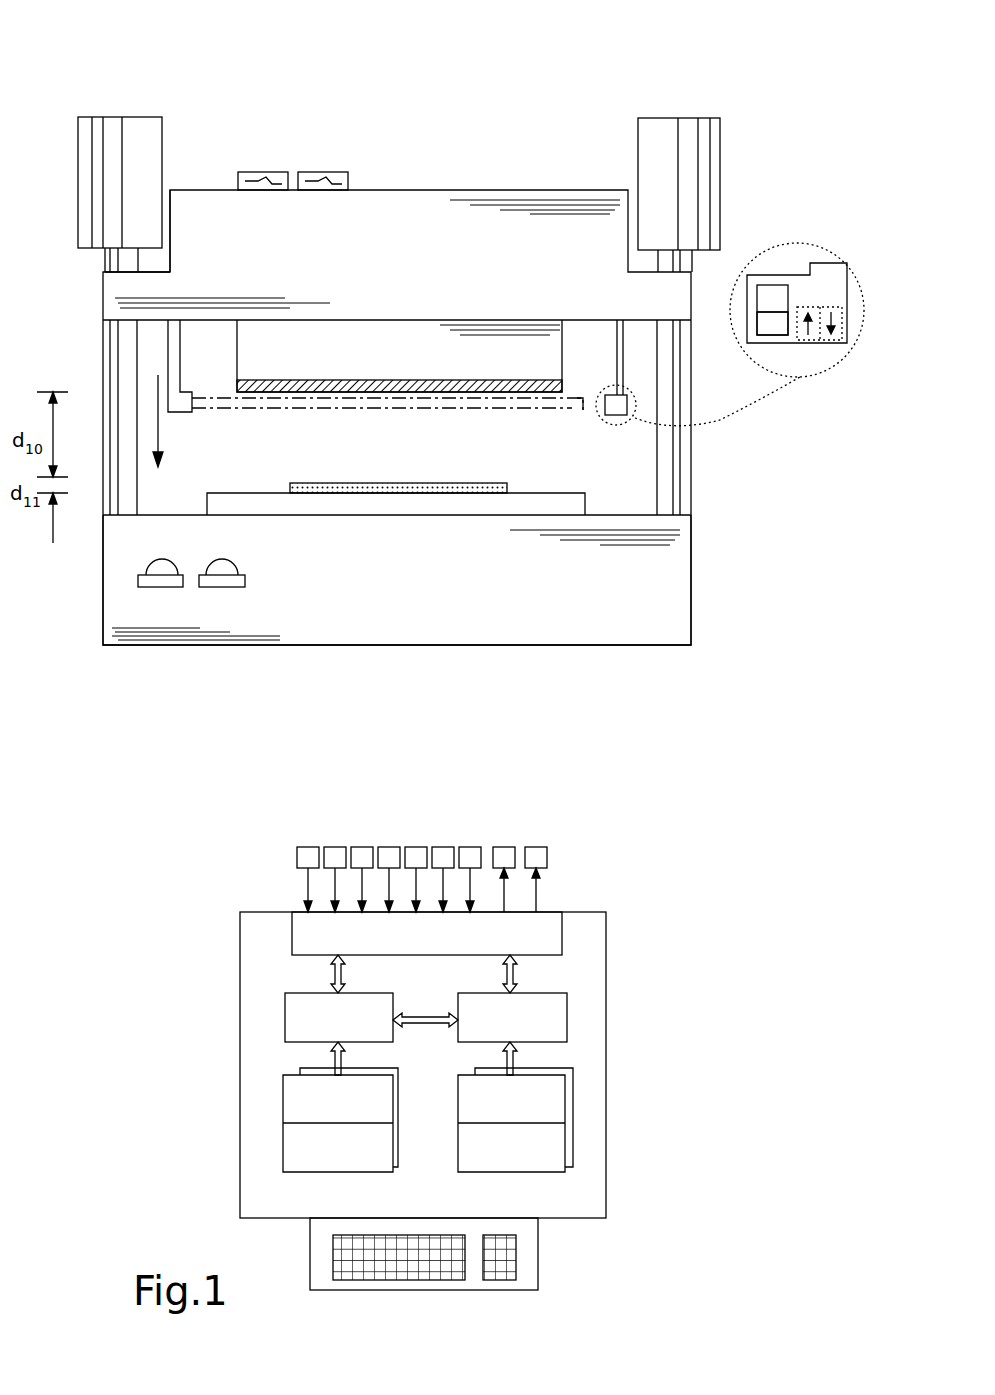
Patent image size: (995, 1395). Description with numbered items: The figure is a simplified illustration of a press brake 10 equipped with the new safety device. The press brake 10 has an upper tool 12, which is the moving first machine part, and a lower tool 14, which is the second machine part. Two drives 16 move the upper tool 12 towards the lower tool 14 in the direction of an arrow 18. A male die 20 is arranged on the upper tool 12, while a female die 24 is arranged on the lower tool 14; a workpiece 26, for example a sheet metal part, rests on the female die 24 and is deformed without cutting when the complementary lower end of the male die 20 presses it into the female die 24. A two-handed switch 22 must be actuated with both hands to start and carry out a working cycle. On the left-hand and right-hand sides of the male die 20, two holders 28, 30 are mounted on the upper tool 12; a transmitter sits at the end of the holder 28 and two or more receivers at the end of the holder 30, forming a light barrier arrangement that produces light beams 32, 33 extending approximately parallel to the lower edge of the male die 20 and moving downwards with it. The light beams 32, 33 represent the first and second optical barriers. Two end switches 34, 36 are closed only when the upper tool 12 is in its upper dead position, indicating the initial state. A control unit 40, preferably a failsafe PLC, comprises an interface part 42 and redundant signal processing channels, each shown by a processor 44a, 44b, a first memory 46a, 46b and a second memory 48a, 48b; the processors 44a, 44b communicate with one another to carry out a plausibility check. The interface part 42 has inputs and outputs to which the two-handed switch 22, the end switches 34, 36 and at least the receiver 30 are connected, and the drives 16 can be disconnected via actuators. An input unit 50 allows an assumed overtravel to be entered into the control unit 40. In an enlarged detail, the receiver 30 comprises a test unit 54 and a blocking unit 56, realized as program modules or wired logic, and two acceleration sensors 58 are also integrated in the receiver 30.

The press brake 10 is at (528, 112).
The upper tool 12 is at (130, 286).
The lower tool 14 is at (683, 598).
The drives 16 is at (112, 117).
The arrow 18 is at (158, 421).
The male die 20 is at (497, 355).
The two-handed switch 22 is at (158, 587).
The female die 24 is at (460, 500).
The workpiece 26 is at (404, 476).
The holder 28 is at (178, 345).
The holder / receiver 30 is at (607, 393).
The light beam (first optical barrier) 32 is at (557, 410).
The light beam (second optical barrier) 33 is at (583, 410).
The end switch 34 is at (270, 172).
The end switch 36 is at (330, 172).
The control unit 40 is at (240, 940).
The interface part 42 is at (555, 935).
The processor 44a is at (290, 1018).
The processor 44b is at (565, 1018).
The first memory 46a is at (285, 1100).
The first memory 46b is at (560, 1098).
The second memory 48a is at (285, 1148).
The second memory 48b is at (560, 1148).
The input unit 50 is at (540, 1253).
The test unit 54 is at (776, 292).
The blocking unit 56 is at (775, 322).
The acceleration sensors 58 is at (832, 338).